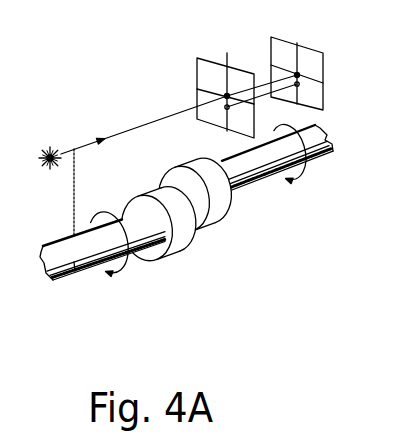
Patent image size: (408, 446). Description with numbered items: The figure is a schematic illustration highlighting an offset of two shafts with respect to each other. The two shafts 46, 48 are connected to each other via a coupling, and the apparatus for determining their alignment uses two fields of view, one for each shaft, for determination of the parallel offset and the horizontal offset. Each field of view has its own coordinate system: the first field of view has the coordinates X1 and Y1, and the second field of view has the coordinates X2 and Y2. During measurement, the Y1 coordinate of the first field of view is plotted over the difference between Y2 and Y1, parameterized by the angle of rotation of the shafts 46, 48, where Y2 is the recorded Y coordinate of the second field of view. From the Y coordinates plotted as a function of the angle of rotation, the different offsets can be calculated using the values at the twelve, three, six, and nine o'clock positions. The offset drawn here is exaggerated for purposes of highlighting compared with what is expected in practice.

The shaft 46 is at (78, 266).
The shaft 48 is at (243, 167).
The X coordinate of the first field of view X1 is at (237, 104).
The Y coordinate of the first field of view Y1 is at (228, 89).
The X coordinate of the second field of view X2 is at (309, 92).
The Y coordinate of the second field of view Y2 is at (299, 64).